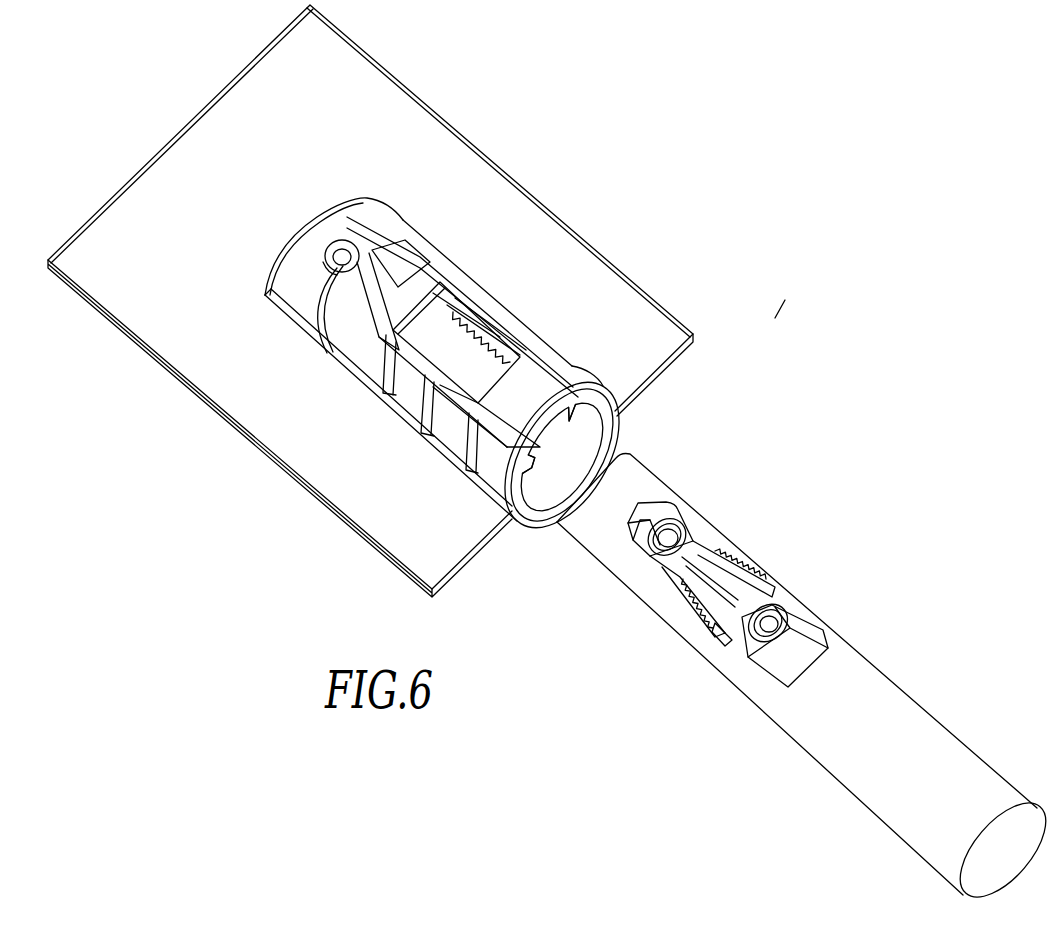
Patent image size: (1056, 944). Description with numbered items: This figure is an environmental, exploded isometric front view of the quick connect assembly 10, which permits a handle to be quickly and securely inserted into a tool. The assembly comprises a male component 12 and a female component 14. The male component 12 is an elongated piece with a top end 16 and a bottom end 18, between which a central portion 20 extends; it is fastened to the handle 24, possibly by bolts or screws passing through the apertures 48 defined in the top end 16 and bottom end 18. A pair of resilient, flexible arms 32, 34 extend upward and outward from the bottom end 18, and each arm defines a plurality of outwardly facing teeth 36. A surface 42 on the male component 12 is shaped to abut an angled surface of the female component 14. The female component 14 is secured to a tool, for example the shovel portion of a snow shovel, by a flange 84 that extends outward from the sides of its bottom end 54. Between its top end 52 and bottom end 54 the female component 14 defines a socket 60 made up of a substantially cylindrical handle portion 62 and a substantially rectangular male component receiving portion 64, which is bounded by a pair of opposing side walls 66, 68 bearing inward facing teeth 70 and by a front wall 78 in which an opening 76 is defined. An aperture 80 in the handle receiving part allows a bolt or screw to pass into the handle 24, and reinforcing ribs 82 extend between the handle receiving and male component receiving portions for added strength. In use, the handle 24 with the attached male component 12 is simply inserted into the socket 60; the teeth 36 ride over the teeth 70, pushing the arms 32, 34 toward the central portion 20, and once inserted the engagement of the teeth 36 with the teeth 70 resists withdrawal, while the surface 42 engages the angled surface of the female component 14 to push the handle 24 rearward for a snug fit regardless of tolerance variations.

The quick connect assembly 10 is at (770, 342).
The male component 12 is at (715, 539).
The female component 14 is at (439, 334).
The top end 16 is at (800, 662).
The bottom end 18 is at (645, 505).
The central portion 20 is at (720, 635).
The handle 24 is at (922, 768).
The arm 32 is at (685, 596).
The arm 34 is at (708, 545).
The teeth 36 is at (752, 566).
The surface 42 is at (630, 523).
The aperture 48 is at (684, 518).
The top end 52 is at (590, 390).
The bottom end 54 is at (302, 262).
The socket 60 is at (597, 457).
The cylindrical handle portion 62 is at (557, 498).
The male component receiving portion 64 is at (567, 458).
The side wall 66 is at (448, 280).
The side wall 68 is at (398, 341).
The teeth 70 is at (478, 328).
The opening 76 is at (432, 330).
The front wall 78 is at (530, 415).
The aperture 80 is at (341, 242).
The reinforcing ribs 82 is at (331, 292).
The flange 84 is at (330, 86).